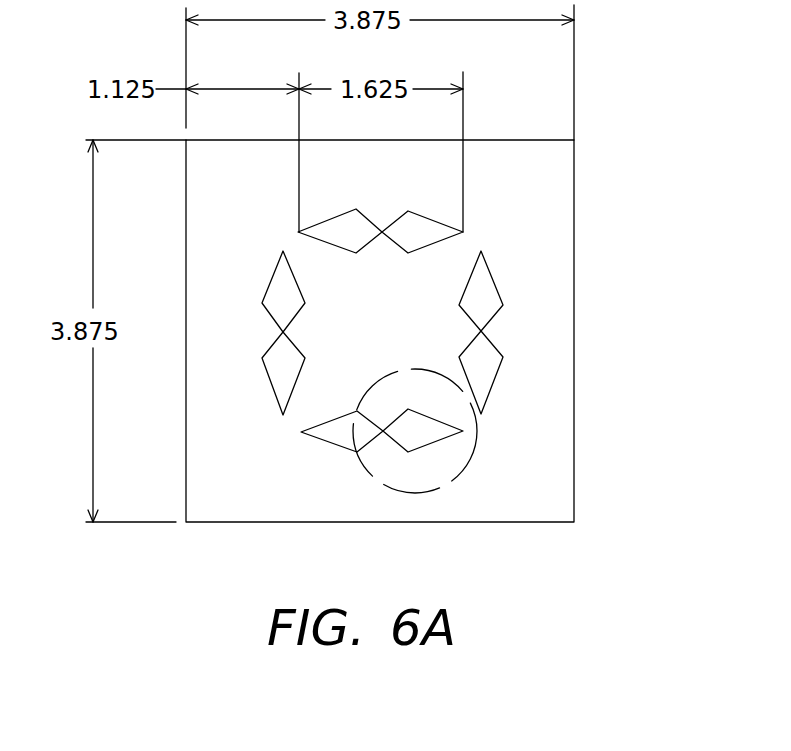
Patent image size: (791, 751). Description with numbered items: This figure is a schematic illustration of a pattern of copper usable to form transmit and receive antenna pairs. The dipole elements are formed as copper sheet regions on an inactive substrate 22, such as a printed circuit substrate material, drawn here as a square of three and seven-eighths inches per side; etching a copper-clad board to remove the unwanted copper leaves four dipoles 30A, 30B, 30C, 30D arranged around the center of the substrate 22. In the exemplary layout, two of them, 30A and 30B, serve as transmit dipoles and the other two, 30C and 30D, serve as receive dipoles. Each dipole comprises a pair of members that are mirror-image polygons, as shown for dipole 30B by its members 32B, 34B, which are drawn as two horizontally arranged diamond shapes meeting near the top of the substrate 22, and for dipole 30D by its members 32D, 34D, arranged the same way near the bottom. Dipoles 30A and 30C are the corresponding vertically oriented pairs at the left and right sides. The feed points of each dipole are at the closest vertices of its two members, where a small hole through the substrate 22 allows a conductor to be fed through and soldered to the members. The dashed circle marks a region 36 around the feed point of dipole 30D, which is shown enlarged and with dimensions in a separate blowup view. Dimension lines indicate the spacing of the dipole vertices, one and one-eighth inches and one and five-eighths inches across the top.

The substrate 22 is at (577, 138).
The dipole 30A is at (261, 302).
The dipole 30B is at (293, 258).
The dipole 30C is at (505, 306).
The dipole 30D is at (391, 422).
The member 32B is at (356, 256).
The member 34B is at (408, 256).
The member 32D is at (343, 449).
The member 34D is at (449, 442).
The region 36 is at (448, 481).